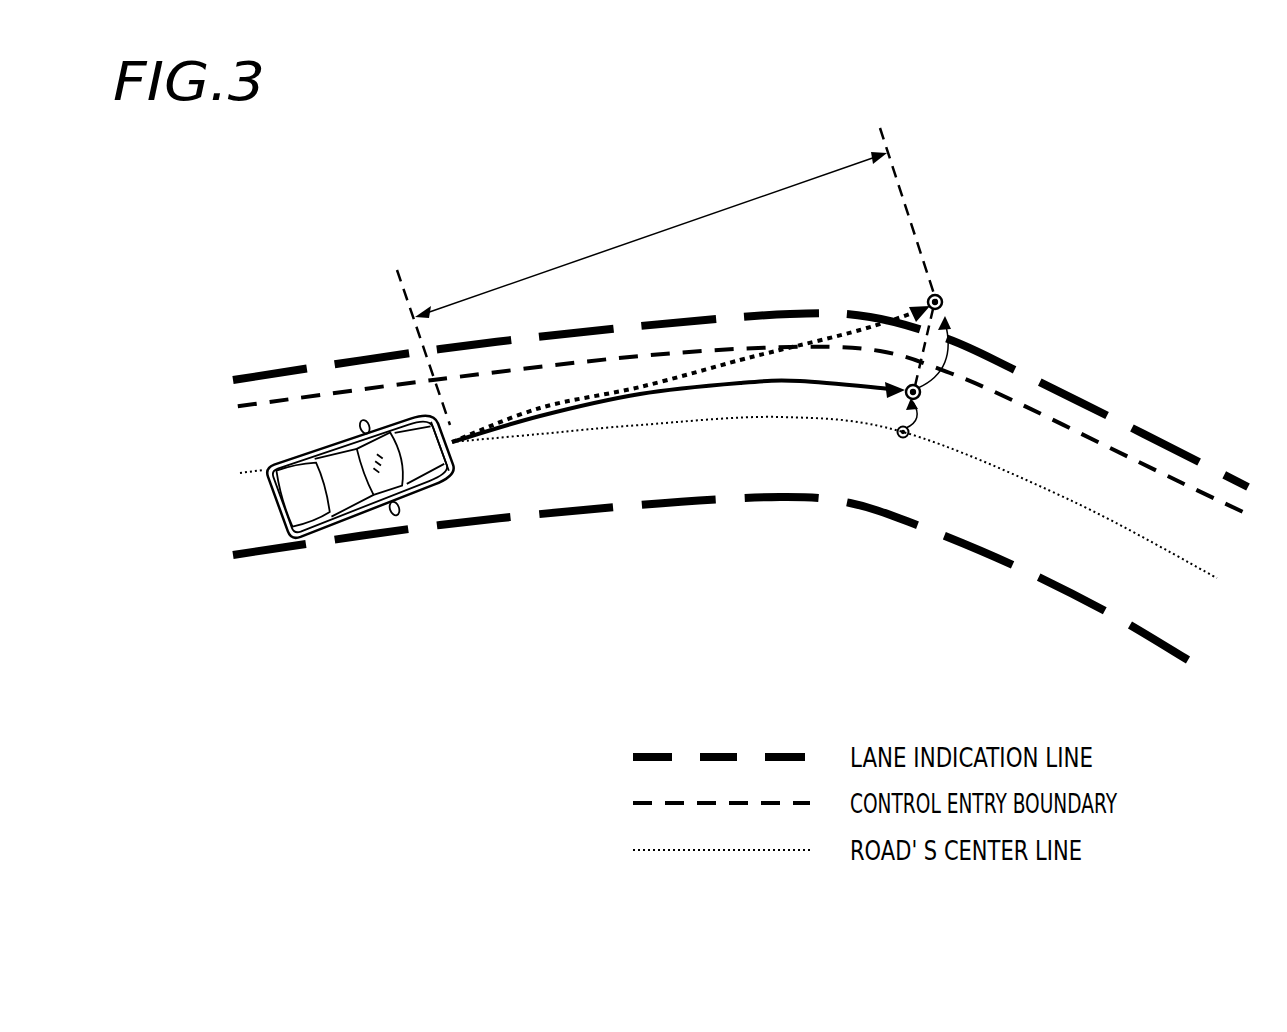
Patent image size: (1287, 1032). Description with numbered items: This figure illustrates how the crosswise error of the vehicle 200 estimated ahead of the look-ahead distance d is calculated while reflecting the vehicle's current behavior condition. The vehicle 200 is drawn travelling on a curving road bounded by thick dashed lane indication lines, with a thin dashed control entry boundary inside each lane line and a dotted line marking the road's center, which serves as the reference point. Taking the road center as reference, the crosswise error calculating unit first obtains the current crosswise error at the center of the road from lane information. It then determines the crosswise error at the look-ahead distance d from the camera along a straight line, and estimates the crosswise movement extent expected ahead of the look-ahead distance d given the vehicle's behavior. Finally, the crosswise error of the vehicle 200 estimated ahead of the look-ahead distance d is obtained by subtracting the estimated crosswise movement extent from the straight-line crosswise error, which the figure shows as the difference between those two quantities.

The vehicle 200 is at (320, 530).
The look-ahead distance d is at (651, 235).